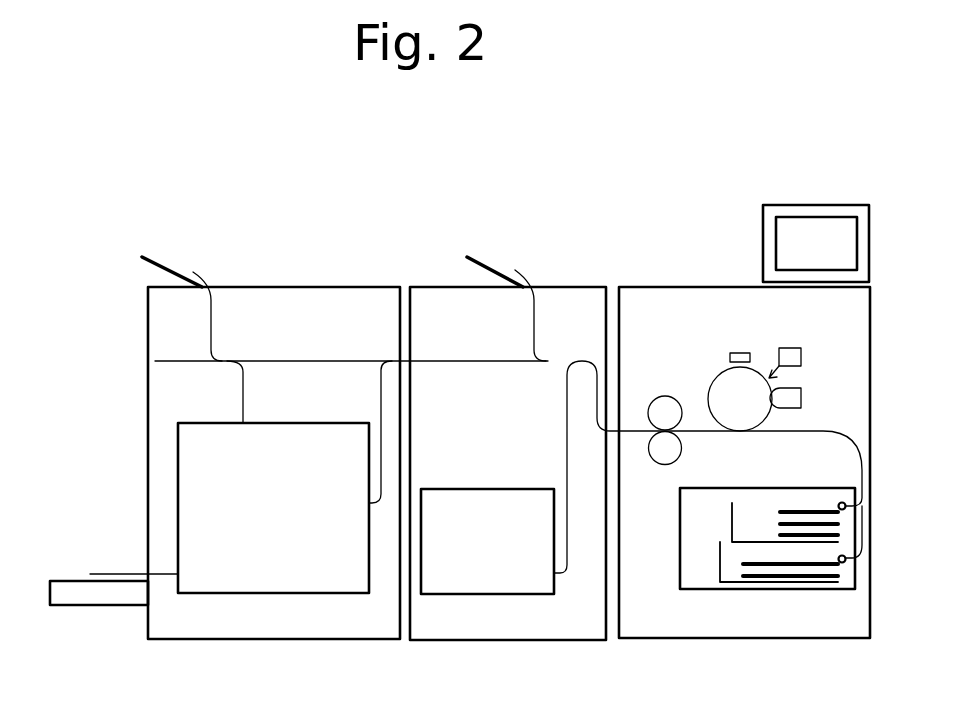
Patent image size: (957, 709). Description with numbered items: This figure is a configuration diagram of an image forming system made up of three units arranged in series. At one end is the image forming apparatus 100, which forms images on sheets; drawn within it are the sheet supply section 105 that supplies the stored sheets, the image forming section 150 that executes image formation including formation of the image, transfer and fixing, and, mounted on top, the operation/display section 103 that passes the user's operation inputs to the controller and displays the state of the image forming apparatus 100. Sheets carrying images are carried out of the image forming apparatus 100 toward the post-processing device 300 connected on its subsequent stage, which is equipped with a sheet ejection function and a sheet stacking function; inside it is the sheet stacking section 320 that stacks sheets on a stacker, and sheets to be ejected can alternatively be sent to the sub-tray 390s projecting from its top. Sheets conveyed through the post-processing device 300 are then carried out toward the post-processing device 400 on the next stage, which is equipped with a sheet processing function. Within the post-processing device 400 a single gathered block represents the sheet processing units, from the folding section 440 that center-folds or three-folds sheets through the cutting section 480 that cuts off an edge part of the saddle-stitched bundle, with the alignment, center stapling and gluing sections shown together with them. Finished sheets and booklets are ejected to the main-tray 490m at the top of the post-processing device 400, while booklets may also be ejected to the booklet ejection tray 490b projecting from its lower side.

The image forming apparatus 100 is at (672, 287).
The operation/display section 103 is at (763, 233).
The sheet supply section 105 is at (782, 488).
The image forming section 150 is at (752, 341).
The post-processing device 300 is at (561, 287).
The sheet stacking section 320 is at (486, 489).
The sub-tray 390s is at (486, 266).
The post-processing device 400 is at (323, 287).
The folding section 440 is at (273, 482).
The cutting section 480 is at (301, 423).
The main-tray 490m is at (172, 276).
The booklet ejection tray 490b is at (75, 580).